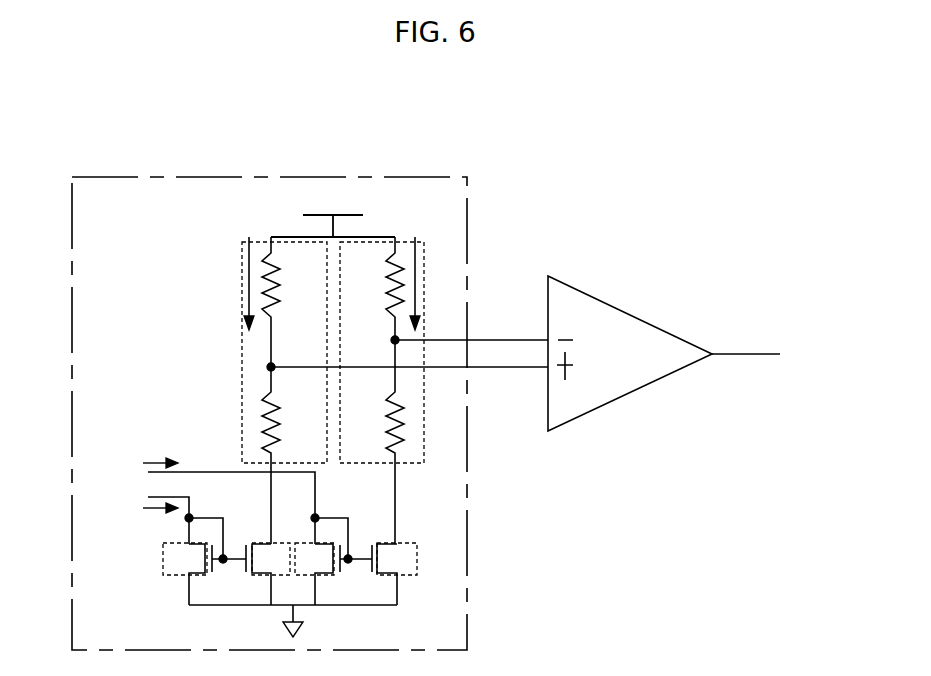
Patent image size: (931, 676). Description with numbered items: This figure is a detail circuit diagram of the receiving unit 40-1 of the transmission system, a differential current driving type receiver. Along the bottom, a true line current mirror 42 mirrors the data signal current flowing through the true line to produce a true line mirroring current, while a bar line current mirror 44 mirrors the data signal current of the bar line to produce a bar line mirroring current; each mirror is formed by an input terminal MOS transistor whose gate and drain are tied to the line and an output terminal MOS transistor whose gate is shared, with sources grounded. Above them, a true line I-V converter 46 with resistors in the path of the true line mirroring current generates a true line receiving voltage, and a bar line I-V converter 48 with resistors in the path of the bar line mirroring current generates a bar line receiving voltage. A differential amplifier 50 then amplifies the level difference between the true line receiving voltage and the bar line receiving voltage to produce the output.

The receiver current comparison circuit block 40-1 is at (437, 177).
The bar line I-V converter 48 is at (241, 378).
The true line I-V converter 46 is at (423, 415).
The bar line current mirror 44 is at (163, 560).
The true line current mirror 42 is at (417, 563).
The differential amplifier 50 is at (628, 392).